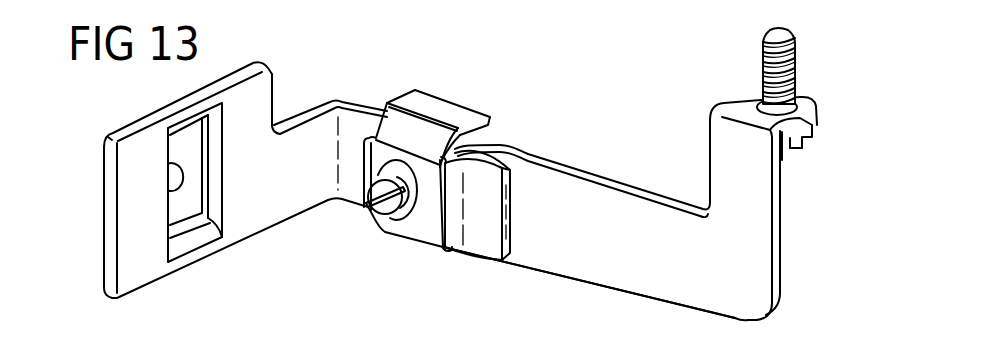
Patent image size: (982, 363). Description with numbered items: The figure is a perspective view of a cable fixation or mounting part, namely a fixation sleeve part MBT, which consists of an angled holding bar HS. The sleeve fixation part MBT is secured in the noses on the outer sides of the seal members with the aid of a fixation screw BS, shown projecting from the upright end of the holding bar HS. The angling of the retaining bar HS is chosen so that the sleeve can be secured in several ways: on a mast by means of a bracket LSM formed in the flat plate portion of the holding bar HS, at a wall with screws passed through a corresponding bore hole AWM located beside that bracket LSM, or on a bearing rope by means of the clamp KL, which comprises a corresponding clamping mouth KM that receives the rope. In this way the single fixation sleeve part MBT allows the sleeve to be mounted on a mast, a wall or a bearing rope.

The angled holding bar HS is at (630, 222).
The bracket LSM is at (192, 152).
The bore hole AWM is at (170, 182).
The clamp KL is at (437, 103).
The clamping mouth KM is at (497, 143).
The fixation screw BS is at (760, 67).
The fixation sleeve part MBT is at (548, 265).